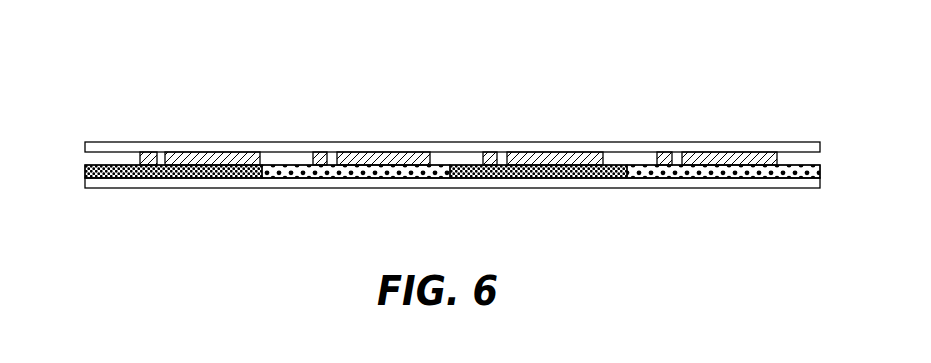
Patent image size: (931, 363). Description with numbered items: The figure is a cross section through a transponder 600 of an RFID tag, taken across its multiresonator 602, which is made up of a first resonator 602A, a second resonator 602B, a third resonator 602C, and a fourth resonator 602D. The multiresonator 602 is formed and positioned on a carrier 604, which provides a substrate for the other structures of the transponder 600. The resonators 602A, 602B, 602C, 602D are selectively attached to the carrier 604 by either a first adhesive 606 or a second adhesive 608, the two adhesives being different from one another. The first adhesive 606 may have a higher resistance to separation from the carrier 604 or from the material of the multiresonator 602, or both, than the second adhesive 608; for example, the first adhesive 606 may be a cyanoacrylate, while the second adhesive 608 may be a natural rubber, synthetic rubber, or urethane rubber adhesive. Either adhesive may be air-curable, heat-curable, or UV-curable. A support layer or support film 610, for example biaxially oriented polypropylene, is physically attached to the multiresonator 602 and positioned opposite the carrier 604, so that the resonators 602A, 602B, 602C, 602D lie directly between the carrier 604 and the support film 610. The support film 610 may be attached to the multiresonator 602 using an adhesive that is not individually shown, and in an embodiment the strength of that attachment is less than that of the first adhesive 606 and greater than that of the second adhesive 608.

The transponder 600 is at (113, 108).
The multiresonator 602 is at (763, 77).
The first resonator 602A is at (253, 129).
The second resonator 602B is at (428, 129).
The third resonator 602C is at (602, 129).
The fourth resonator 602D is at (777, 129).
The carrier 604 is at (105, 188).
The first adhesive 606 is at (213, 176).
The second adhesive 608 is at (383, 176).
The support film 610 is at (803, 142).